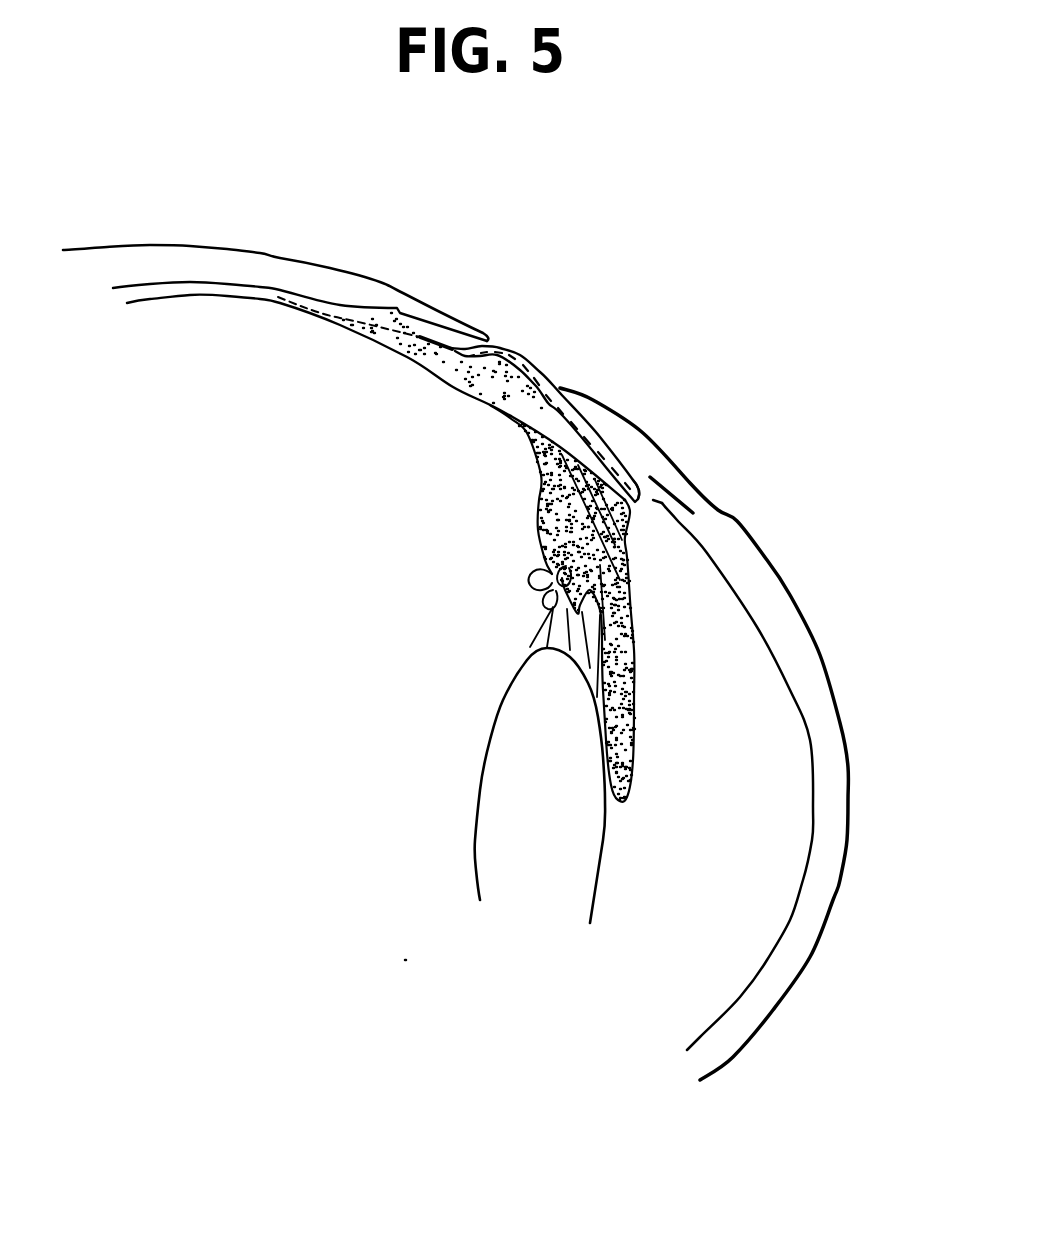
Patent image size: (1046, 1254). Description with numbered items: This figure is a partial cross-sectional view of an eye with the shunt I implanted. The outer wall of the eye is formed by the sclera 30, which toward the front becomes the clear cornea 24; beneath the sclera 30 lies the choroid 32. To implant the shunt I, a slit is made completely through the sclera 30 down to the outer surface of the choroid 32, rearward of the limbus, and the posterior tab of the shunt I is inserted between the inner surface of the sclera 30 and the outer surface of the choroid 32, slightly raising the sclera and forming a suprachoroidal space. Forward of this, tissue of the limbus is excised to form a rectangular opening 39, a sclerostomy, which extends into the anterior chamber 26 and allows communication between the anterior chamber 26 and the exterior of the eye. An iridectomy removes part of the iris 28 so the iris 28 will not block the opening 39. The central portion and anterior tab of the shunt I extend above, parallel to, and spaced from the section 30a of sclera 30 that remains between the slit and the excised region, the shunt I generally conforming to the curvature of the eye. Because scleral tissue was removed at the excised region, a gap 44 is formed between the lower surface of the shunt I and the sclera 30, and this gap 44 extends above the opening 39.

The cornea 24 is at (832, 762).
The anterior chamber 26 is at (730, 742).
The iris 28 is at (636, 710).
The sclera 30 is at (272, 260).
The section of sclera 30a is at (508, 397).
The choroid 32 is at (250, 303).
The opening 39 is at (653, 503).
The gap 44 is at (645, 482).
The ophthalmic shunt implant I is at (535, 362).